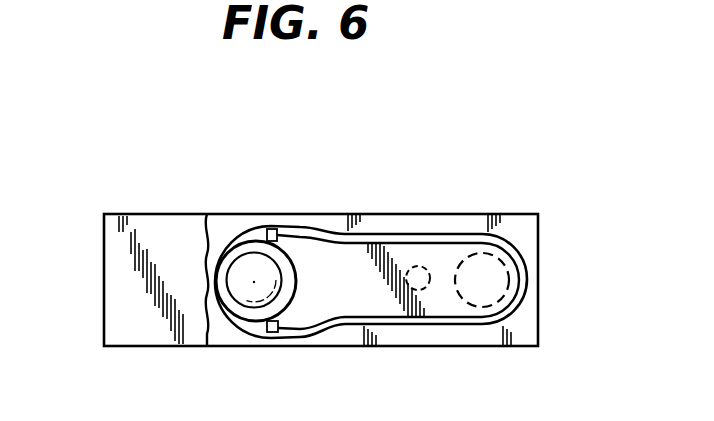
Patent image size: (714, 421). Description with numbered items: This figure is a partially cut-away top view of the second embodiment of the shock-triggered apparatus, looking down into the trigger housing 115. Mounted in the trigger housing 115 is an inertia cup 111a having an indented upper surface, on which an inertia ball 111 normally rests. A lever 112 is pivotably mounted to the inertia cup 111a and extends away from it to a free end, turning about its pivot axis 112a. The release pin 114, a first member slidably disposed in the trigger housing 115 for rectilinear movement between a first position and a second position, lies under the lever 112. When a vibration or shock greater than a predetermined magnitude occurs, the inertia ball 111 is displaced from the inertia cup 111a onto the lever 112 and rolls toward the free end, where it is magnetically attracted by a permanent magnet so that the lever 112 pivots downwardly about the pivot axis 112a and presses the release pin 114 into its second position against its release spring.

The inertia ball 111 is at (265, 268).
The inertia cup 111a is at (255, 238).
The lever 112 is at (303, 315).
The pivot axis 112a is at (275, 230).
The release pin 114 is at (430, 270).
The trigger housing 115 is at (103, 272).